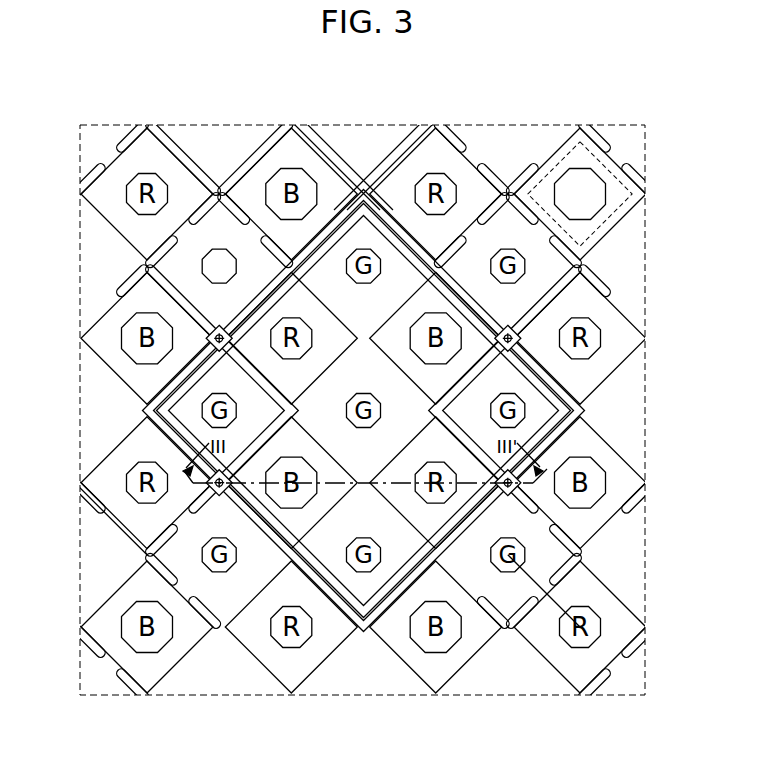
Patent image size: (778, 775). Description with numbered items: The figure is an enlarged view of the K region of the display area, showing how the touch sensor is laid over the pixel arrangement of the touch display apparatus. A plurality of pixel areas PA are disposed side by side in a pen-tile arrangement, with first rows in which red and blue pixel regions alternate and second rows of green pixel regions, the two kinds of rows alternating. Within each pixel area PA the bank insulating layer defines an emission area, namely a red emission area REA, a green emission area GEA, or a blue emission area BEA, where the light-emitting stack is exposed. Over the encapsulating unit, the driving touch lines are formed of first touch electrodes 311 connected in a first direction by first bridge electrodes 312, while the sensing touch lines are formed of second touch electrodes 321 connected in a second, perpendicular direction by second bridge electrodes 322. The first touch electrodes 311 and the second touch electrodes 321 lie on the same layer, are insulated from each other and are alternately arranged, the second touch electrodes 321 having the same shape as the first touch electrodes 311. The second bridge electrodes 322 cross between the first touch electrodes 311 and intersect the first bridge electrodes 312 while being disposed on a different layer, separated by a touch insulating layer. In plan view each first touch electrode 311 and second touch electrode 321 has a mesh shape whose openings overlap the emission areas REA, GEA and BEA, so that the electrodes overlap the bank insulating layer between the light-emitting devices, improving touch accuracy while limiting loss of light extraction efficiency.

The K region K is at (95, 124).
The pixel area PA is at (606, 165).
The red emission area REA is at (128, 206).
The green emission area GEA is at (202, 272).
The blue emission area BEA is at (605, 193).
The first touch electrode 311 is at (552, 148).
The first bridge electrode 312 is at (460, 383).
The second touch electrode 321 is at (104, 506).
The second bridge electrode 322 is at (363, 180).